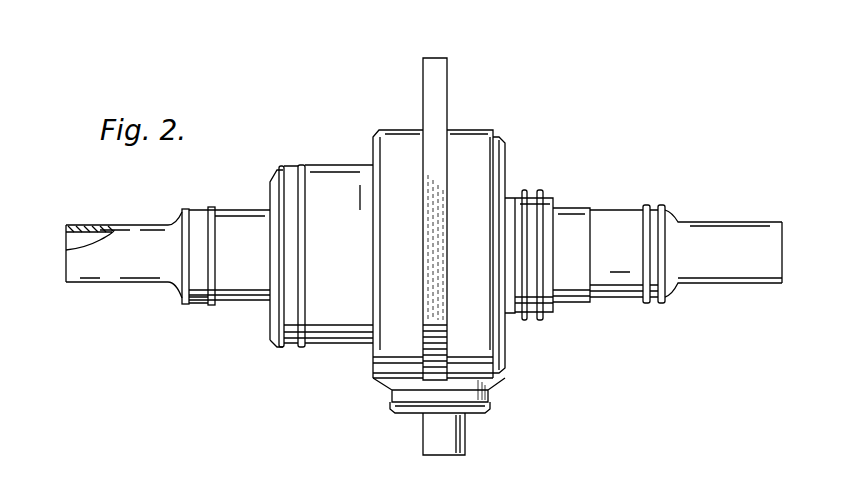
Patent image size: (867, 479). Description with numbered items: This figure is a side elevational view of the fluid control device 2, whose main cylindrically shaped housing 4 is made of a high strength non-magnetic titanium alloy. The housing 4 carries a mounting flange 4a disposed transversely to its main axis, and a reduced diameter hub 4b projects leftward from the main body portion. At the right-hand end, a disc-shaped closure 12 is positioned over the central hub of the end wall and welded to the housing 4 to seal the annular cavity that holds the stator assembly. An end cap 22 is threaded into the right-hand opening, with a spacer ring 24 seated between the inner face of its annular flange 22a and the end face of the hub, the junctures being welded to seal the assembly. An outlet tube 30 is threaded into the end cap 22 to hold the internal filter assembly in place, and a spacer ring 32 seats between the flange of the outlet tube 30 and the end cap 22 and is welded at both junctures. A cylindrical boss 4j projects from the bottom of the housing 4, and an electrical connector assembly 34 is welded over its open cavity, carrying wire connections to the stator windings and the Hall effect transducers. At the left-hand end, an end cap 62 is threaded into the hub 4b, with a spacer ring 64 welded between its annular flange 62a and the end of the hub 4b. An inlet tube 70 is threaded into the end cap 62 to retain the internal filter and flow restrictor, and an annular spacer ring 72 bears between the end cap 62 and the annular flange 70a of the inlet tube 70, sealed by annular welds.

The fluid control device 2 is at (496, 103).
The main cylindrically shaped housing 4 is at (396, 130).
The mounting flange 4a is at (447, 74).
The reduced diameter hub 4b is at (334, 165).
The cylindrical boss 4j is at (490, 394).
The disc-shaped closure 12 is at (506, 147).
The end cap 22 is at (623, 287).
The annular flange 22a is at (556, 206).
The spacer ring 24 is at (531, 192).
The outlet tube 30 is at (746, 266).
The spacer ring 32 is at (650, 300).
The electrical connector assembly 34 is at (449, 438).
The end cap 62 is at (250, 288).
The annular flange 62a is at (272, 182).
The spacer ring 64 is at (300, 165).
The inlet tube 70 is at (134, 270).
The annular flange 70a is at (177, 213).
The annular spacer ring 72 is at (203, 286).